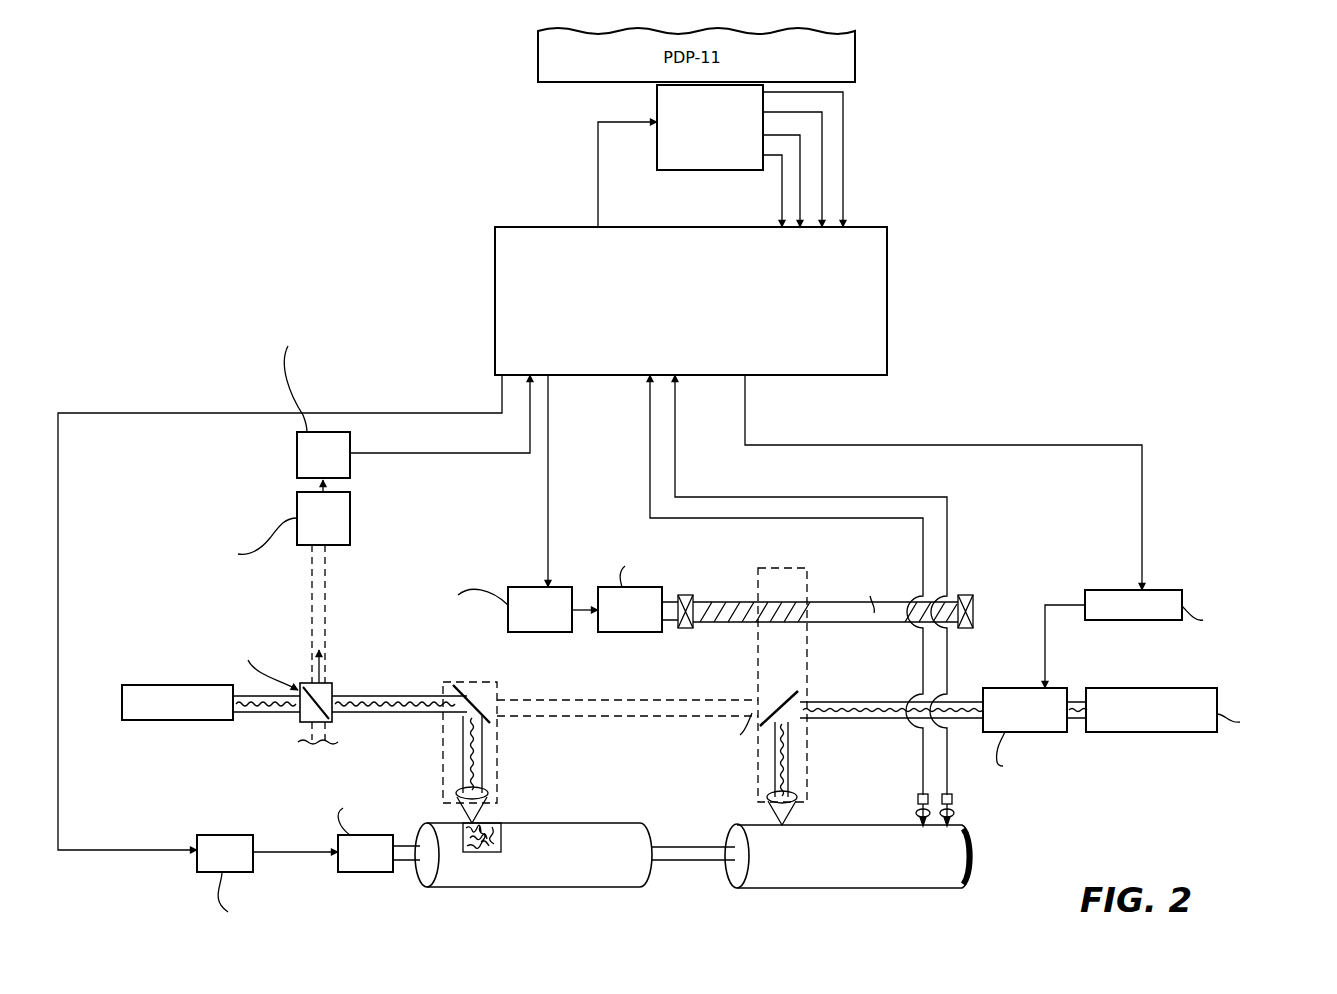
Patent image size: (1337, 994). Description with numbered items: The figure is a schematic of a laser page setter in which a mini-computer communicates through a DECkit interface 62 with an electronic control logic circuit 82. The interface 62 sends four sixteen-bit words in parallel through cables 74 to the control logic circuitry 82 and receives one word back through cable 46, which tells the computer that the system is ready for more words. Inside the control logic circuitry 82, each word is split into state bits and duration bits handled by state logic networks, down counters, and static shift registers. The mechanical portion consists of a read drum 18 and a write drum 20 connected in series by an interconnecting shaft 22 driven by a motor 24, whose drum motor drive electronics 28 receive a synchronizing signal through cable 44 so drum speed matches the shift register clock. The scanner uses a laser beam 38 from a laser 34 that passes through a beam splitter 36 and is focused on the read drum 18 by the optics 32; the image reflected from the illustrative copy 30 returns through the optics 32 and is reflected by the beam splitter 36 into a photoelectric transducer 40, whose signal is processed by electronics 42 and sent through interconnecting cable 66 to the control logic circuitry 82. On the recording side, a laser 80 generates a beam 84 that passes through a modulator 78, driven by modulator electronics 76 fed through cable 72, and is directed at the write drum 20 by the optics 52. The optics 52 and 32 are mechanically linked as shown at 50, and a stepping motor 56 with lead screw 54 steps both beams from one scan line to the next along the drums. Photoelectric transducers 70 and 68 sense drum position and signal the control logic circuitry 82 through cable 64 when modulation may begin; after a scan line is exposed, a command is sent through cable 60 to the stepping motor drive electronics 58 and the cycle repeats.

The read drum 18 is at (604, 850).
The write drum 20 is at (934, 868).
The interconnecting shaft 22 is at (703, 848).
The motor 24 is at (354, 864).
The drum motor drive electronics 28 is at (214, 864).
The original document on read drum 30 is at (500, 840).
The optics 32 is at (497, 778).
The laser 34 is at (154, 685).
The beam splitter 36 is at (332, 688).
The laser beam 38 is at (396, 706).
The photoelectric transducer 40 is at (312, 530).
The electronics 42 is at (312, 466).
The cable 44 is at (111, 413).
The cable 46 is at (597, 206).
The mechanical link 50 is at (628, 700).
The optics 52 is at (803, 692).
The stepping motor and lead screw 54 is at (755, 601).
The stepping motor 56 is at (619, 618).
The stepping motor drive electronics 58 is at (529, 618).
The cable 60 is at (547, 508).
The DECkit 11-H interface 62 is at (657, 88).
The cable 64 is at (925, 540).
The interconnecting cable 66 is at (367, 454).
The photoelectric transducer 68 is at (950, 800).
The photoelectric transducer 70 is at (916, 800).
The cable 72 is at (1080, 445).
The cables 74 is at (782, 185).
The modulator electronics 76 is at (1122, 616).
The modulator 78 is at (1014, 720).
The laser 80 is at (1140, 720).
The electronic control logic circuit 82 is at (887, 258).
The beam 84 is at (878, 712).